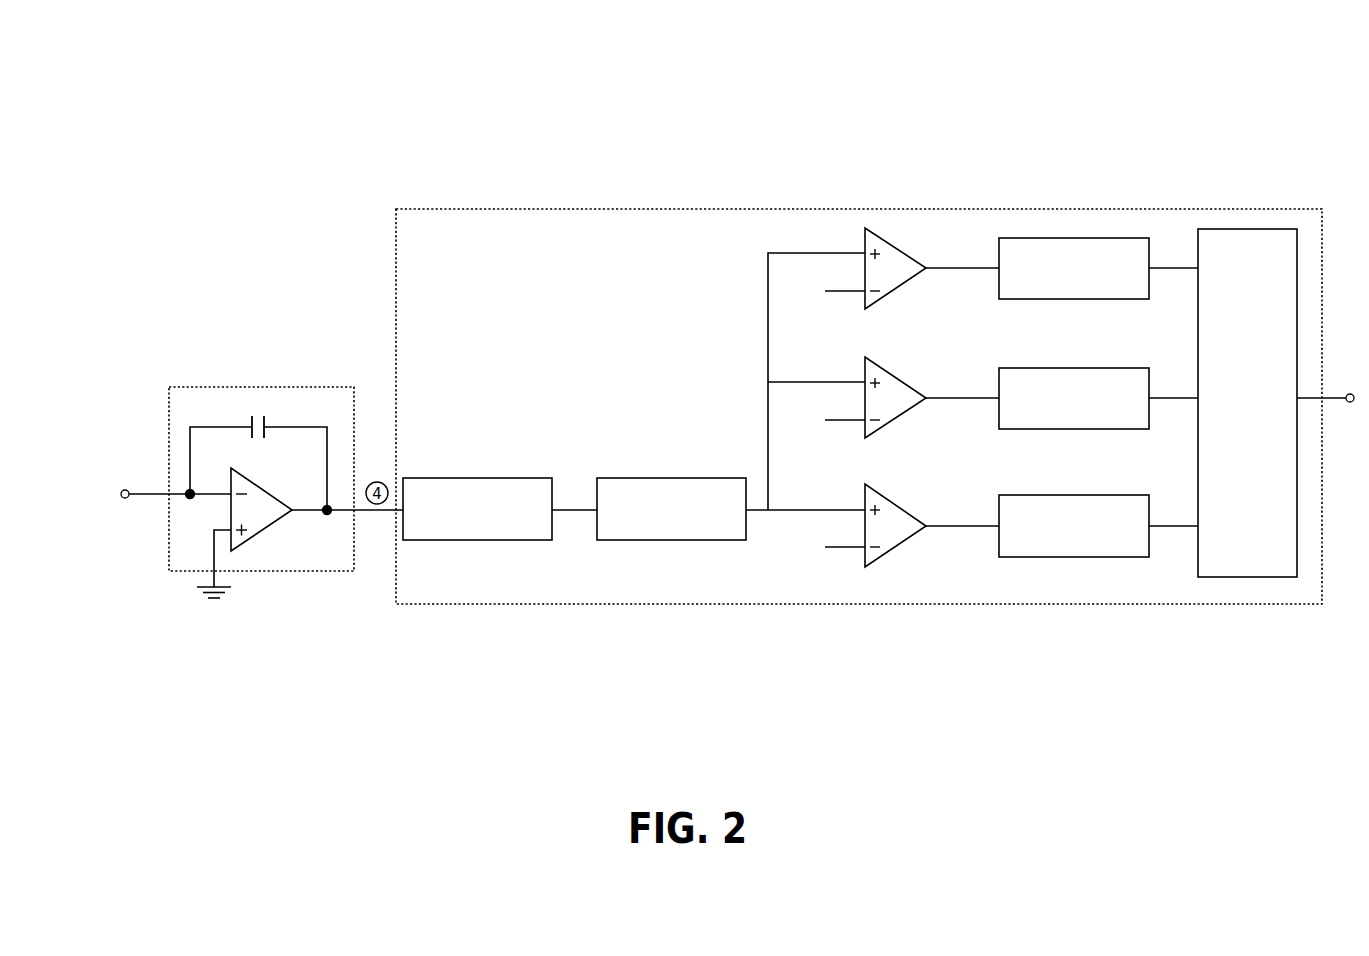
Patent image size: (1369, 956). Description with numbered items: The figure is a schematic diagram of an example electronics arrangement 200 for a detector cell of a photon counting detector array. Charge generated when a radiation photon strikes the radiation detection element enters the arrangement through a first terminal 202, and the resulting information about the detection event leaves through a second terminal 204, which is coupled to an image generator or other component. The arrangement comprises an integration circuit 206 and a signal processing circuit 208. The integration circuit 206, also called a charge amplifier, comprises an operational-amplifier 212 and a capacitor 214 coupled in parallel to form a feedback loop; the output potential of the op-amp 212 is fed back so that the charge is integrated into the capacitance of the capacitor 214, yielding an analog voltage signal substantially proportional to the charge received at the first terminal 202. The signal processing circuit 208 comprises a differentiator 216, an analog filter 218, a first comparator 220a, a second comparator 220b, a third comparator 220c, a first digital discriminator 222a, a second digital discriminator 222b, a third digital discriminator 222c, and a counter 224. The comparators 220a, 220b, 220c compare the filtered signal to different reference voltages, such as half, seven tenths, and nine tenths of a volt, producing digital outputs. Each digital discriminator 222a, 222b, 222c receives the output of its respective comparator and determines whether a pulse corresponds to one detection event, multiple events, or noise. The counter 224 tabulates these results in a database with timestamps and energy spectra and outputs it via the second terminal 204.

The electronics arrangement 200 is at (199, 37).
The first terminal 202 is at (122, 488).
The second terminal 204 is at (1350, 405).
The integration circuit 206 is at (262, 387).
The signal processing circuit 208 is at (905, 209).
The operational-amplifier 212 is at (262, 533).
The capacitor 214 is at (262, 454).
The differentiator 216 is at (479, 478).
The analog filter 218 is at (672, 478).
The first comparator 220a is at (893, 547).
The second comparator 220b is at (893, 420).
The third comparator 220c is at (893, 290).
The first digital discriminator 222a is at (1073, 557).
The second digital discriminator 222b is at (1073, 429).
The third digital discriminator 222c is at (1073, 299).
The counter 224 is at (1250, 229).